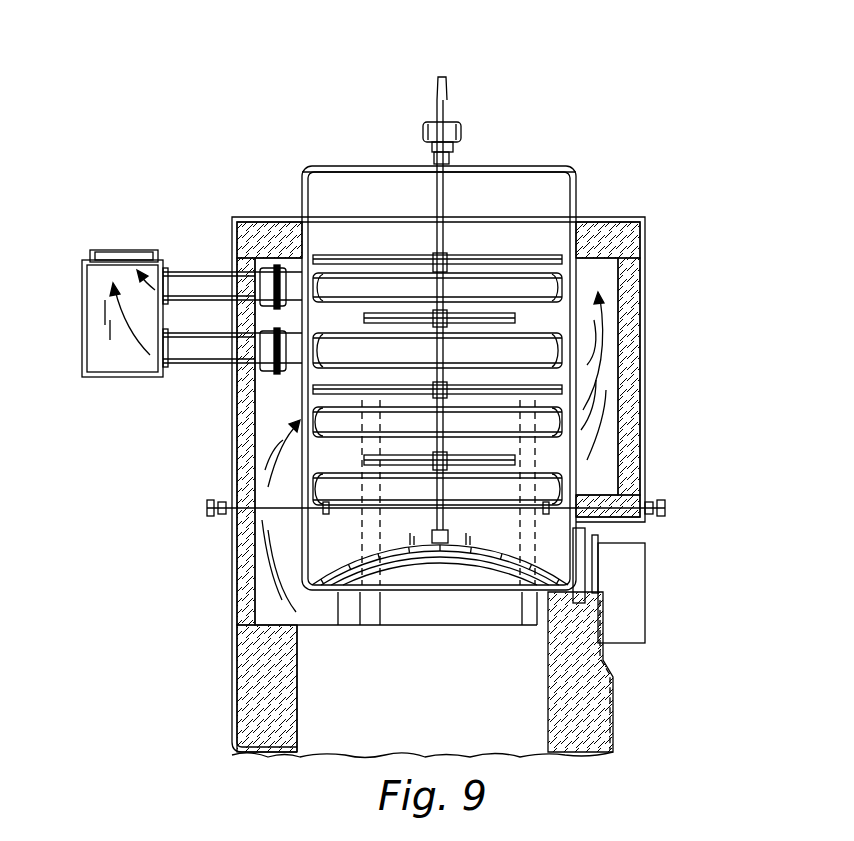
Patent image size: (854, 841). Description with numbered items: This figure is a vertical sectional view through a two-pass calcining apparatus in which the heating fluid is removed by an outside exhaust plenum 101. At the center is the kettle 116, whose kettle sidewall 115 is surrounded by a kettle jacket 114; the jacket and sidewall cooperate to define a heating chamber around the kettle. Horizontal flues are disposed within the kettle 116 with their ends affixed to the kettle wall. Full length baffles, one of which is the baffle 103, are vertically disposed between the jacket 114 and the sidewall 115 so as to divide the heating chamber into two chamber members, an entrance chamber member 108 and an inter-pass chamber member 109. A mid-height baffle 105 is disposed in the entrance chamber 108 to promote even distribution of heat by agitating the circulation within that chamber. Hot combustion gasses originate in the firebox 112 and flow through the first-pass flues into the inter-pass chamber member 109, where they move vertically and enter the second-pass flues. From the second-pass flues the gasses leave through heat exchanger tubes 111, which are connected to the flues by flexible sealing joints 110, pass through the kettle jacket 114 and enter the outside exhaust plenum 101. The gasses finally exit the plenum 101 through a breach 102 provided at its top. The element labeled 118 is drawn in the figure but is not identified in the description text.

The outside exhaust plenum 101 is at (95, 316).
The breach 102 is at (100, 252).
The full length baffle 103 is at (527, 612).
The mid-height baffle 105 is at (371, 612).
The entrance chamber member 108 is at (282, 461).
The inter-pass chamber member 109 is at (605, 288).
The flexible sealing joint 110 is at (272, 288).
The heat exchanger tube 111 is at (195, 349).
The firebox 112 is at (533, 735).
The kettle jacket 114 is at (233, 438).
The kettle sidewall 115 is at (302, 392).
The kettle 116 is at (540, 246).
The bottom air passage 118 is at (277, 625).